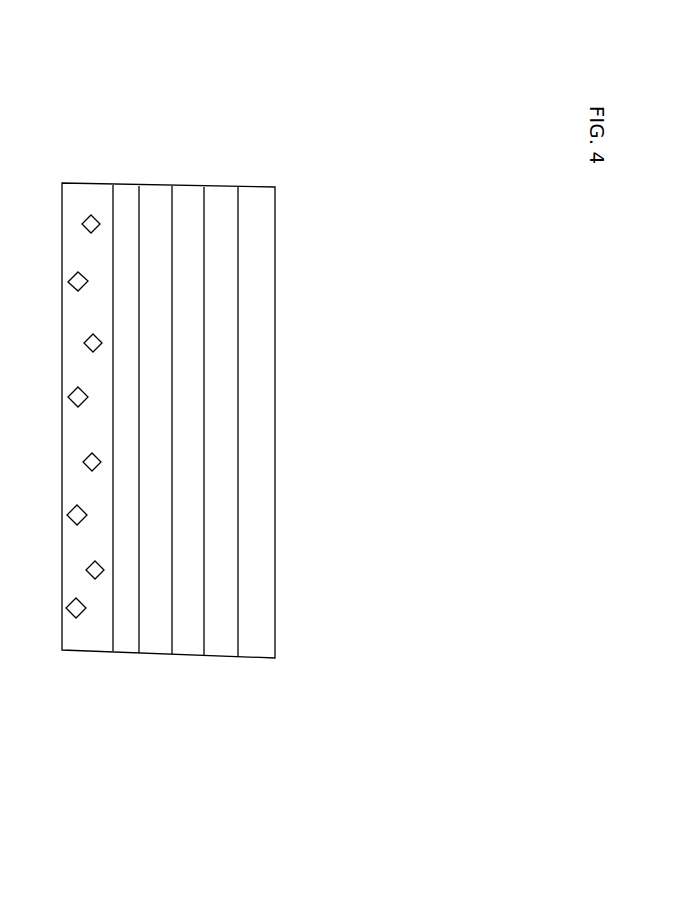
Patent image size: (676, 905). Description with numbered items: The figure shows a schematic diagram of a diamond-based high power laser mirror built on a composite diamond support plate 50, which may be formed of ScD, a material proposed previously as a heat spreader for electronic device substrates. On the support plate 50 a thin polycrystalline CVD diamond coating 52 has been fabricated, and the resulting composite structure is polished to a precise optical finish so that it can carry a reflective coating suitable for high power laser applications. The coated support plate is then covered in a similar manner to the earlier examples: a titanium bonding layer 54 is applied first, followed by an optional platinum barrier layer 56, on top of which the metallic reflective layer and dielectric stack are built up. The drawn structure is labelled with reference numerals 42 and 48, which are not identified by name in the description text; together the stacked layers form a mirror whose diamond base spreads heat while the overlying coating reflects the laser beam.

The multilayer article 42 is at (157, 188).
The intermediate layer 48 is at (228, 190).
The composite diamond support plate 50 is at (83, 652).
The polycrystalline CVD diamond coating 52 is at (123, 652).
The titanium bonding layer 54 is at (187, 650).
The platinum barrier layer 56 is at (257, 651).